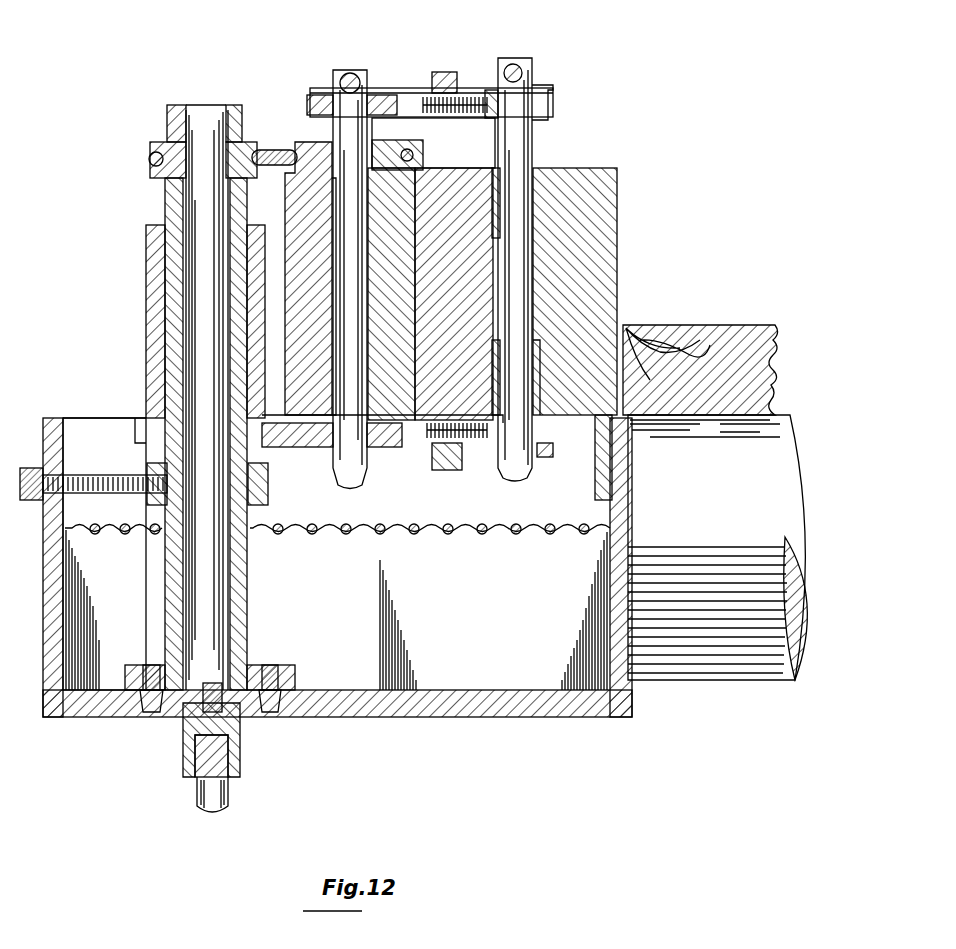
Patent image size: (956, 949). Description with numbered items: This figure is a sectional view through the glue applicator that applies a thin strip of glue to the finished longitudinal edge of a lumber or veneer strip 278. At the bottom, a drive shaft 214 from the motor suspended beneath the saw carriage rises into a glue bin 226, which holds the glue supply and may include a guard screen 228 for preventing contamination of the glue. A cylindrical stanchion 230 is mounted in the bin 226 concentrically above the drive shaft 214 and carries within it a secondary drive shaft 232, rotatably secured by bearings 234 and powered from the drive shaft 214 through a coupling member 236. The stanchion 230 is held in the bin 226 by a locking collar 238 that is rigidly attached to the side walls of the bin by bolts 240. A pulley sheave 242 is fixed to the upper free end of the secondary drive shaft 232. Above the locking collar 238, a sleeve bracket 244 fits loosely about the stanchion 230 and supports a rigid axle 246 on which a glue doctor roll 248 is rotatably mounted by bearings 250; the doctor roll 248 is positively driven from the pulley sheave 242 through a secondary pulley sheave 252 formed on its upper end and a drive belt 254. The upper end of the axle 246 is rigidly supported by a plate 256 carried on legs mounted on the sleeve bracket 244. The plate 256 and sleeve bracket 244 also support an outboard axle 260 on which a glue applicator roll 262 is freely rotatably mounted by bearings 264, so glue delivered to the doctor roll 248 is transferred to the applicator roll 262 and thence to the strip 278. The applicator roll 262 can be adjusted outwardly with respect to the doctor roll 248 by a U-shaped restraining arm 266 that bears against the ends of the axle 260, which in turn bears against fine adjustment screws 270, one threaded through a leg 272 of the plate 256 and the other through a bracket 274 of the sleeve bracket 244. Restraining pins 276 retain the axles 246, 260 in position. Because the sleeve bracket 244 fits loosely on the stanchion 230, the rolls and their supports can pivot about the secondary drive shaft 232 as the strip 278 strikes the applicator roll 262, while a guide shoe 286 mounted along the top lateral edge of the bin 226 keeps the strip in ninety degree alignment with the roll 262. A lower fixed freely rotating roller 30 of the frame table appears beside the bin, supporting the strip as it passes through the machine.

The lower fixed freely rotating roller 30 is at (730, 531).
The drive shaft 214 is at (196, 795).
The glue bin 226 is at (563, 690).
The guard screen 228 is at (428, 534).
The cylindrical stanchion 230 is at (166, 602).
The secondary drive shaft 232 is at (232, 614).
The bearings 234 is at (165, 203).
The coupling member 236 is at (241, 748).
The locking collar 238 is at (268, 486).
The bolts 240 is at (115, 460).
The pulley sheave 242 is at (167, 125).
The sleeve bracket 244 is at (148, 328).
The rigid axle 246 is at (360, 482).
The glue doctor roll 248 is at (412, 312).
The bearings 250 is at (414, 380).
The secondary pulley sheave 252 is at (300, 145).
The drive belt 254 is at (149, 160).
The plate 256 is at (313, 97).
The outboard axle 260 is at (530, 156).
The glue applicator roll 262 is at (603, 309).
The bearings 264 is at (494, 170).
The U-shaped restraining arm 266 is at (548, 90).
The fine adjustment screws 270 is at (470, 96).
The leg 272 is at (432, 80).
The bracket 274 is at (450, 470).
The restraining pins 276 is at (350, 72).
The lumber or veneer strip 278 is at (664, 325).
The guide shoe 286 is at (632, 425).